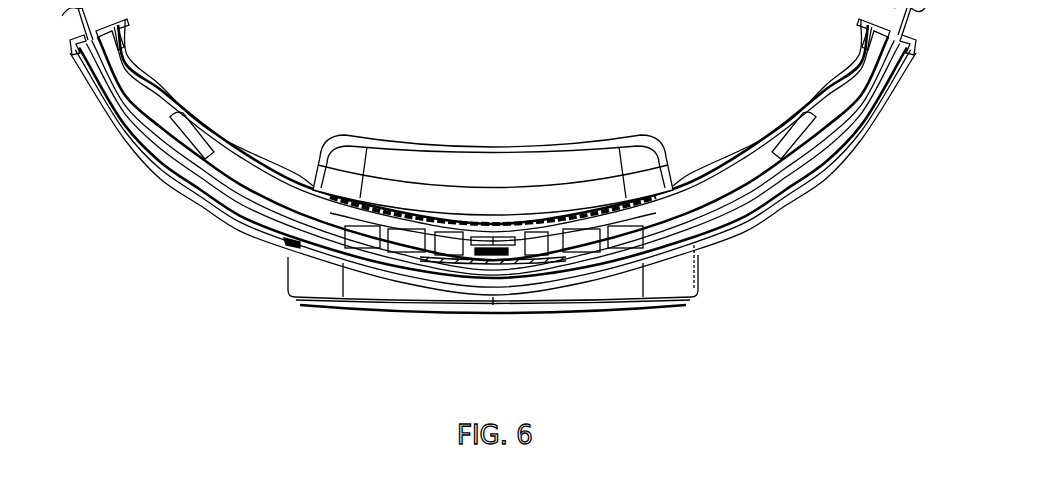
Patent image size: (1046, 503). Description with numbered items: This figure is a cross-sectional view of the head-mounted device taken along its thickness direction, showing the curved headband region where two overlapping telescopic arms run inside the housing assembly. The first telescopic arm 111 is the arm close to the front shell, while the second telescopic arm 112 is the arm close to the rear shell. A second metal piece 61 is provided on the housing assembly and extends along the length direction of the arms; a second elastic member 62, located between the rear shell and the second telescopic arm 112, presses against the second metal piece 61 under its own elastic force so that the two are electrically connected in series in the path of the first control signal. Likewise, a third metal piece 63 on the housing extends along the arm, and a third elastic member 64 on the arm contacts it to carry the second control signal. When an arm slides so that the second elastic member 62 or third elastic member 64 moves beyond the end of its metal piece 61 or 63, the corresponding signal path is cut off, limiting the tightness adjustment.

The second metal piece 61 is at (232, 212).
The second elastic member 62 is at (280, 252).
The third metal piece 63 is at (734, 202).
The third elastic member 64 is at (752, 205).
The first telescopic arm 111 is at (684, 245).
The second telescopic arm 112 is at (358, 257).